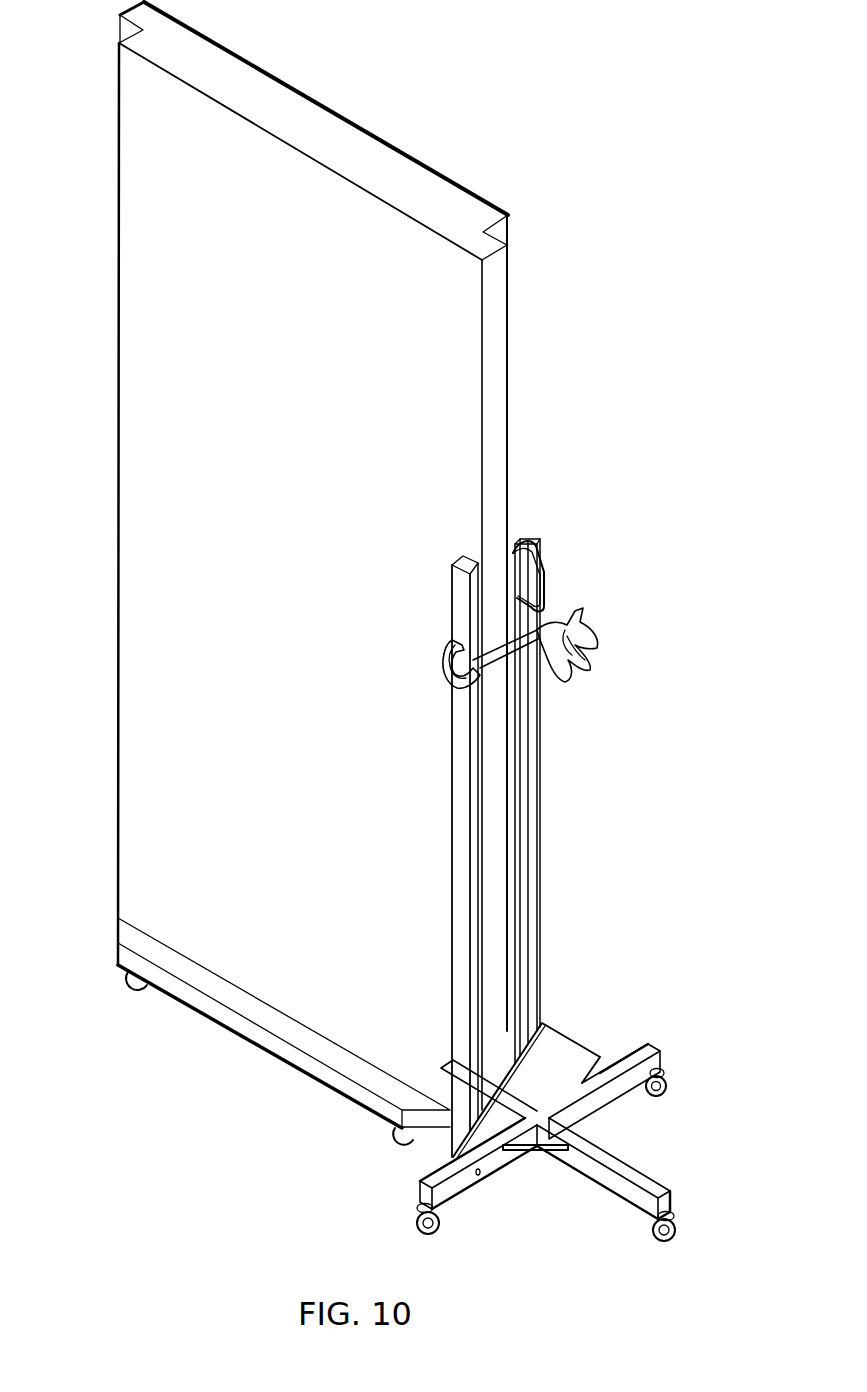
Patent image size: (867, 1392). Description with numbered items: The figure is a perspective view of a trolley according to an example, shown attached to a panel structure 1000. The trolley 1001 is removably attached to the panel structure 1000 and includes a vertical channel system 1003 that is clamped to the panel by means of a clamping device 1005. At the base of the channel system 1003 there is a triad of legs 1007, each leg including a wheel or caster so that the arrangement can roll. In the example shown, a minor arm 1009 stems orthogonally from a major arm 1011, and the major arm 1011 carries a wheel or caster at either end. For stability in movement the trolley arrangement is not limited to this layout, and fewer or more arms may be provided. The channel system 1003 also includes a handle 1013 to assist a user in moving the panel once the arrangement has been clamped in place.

The panel structure 1000 is at (386, 238).
The trolley 1001 is at (601, 1003).
The vertical channel system 1003 is at (543, 769).
The clamping device 1005 is at (597, 627).
The triad of legs 1007 is at (548, 1190).
The minor arm 1009 is at (670, 1196).
The major arm 1011 is at (662, 1047).
The handle 1013 is at (546, 580).